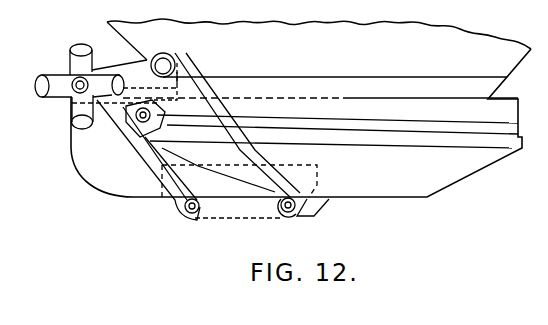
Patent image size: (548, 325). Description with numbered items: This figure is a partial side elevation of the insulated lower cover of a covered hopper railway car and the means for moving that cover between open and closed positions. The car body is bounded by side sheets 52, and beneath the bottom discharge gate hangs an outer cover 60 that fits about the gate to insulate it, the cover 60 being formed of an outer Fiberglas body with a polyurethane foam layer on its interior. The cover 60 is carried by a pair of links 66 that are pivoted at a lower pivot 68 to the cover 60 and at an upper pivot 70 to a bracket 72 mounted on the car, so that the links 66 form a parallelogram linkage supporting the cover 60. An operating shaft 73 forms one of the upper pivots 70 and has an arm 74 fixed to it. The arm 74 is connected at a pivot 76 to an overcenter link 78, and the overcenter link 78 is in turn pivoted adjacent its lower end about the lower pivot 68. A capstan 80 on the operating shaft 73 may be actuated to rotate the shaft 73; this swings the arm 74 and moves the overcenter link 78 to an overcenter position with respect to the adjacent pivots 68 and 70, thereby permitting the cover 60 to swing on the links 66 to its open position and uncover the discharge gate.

The side sheets 52 is at (1, 275).
The outer cover 60 is at (448, 190).
The links 66 is at (143, 157).
The pivot 68 is at (193, 213).
The pivot 70 is at (175, 58).
The bracket 72 is at (108, 65).
The operating shaft 73 is at (72, 95).
The arm 74 is at (256, 184).
The pivot 76 is at (155, 118).
The overcenter link 78 is at (126, 97).
The capstan 80 is at (52, 77).